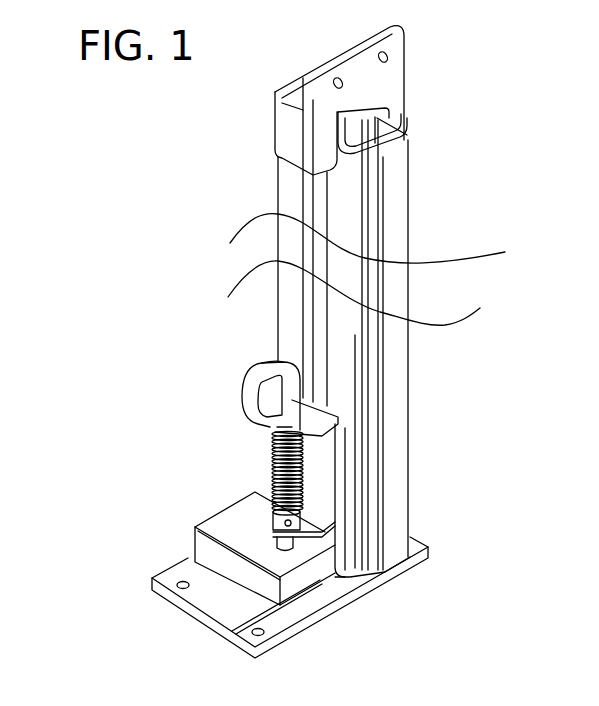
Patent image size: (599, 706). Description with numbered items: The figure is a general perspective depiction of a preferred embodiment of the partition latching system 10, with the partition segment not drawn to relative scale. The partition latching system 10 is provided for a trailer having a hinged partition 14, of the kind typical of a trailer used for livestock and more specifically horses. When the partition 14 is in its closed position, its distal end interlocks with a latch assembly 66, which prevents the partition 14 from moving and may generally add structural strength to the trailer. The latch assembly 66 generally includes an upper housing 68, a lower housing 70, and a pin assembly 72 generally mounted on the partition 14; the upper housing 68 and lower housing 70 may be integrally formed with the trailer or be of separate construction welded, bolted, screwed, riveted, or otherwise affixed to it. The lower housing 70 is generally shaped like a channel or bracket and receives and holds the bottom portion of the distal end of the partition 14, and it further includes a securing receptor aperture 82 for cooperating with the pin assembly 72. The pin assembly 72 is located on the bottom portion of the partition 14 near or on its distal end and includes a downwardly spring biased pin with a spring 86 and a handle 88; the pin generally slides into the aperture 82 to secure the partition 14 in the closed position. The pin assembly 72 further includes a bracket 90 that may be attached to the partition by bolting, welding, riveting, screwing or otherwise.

The partition latching system 10 is at (155, 172).
The partition 14 is at (421, 212).
The latch assembly 66 is at (152, 595).
The upper housing 68 is at (414, 83).
The lower housing 70 is at (201, 524).
The pin assembly 72 is at (263, 454).
The aperture 82 is at (243, 390).
The spring 86 is at (268, 479).
The handle 88 is at (263, 358).
The bracket 90 is at (327, 417).